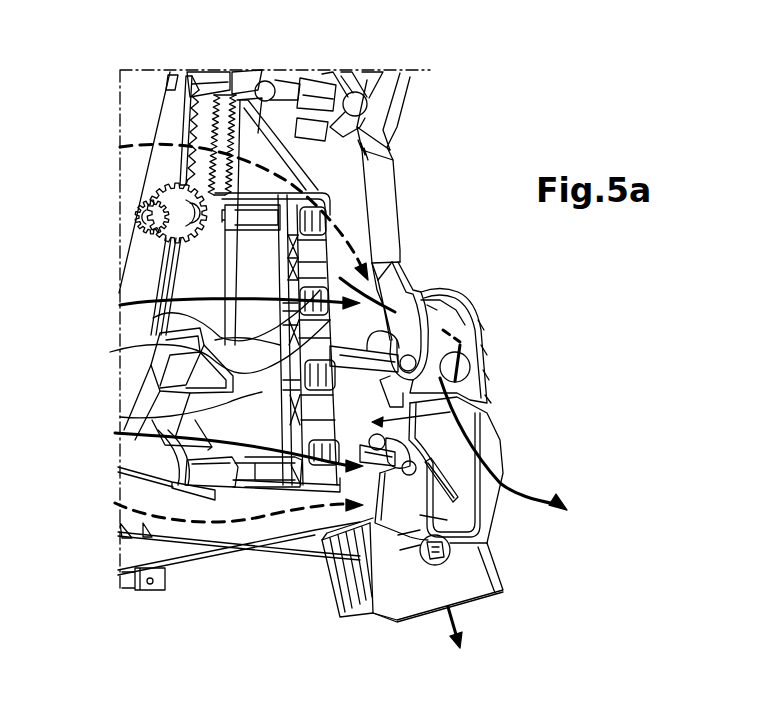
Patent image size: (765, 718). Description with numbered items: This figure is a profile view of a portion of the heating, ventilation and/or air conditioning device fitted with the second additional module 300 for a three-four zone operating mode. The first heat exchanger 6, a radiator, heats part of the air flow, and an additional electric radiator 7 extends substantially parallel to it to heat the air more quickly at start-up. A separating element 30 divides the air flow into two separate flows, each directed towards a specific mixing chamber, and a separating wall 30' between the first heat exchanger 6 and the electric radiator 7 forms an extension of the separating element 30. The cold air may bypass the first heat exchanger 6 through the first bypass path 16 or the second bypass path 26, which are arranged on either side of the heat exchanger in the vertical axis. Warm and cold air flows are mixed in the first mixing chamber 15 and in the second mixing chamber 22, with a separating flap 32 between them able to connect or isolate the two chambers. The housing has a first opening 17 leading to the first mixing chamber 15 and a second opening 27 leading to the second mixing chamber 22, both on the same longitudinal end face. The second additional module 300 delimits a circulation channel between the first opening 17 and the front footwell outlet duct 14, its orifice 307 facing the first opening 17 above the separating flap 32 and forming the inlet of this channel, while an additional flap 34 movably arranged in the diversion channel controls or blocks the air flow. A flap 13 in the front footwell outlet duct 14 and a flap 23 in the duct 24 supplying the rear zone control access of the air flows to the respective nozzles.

The first heat exchanger 6 is at (247, 265).
The additional electric radiator 7 is at (292, 318).
The flap 13 is at (360, 505).
The front footwell outlet duct 14 is at (500, 443).
The first air flow mixing chamber 15 is at (352, 195).
The first bypass path 16 is at (258, 133).
The first opening 17 is at (396, 300).
The second mixing chamber 22 is at (473, 436).
The flap 23 is at (453, 543).
The duct 24 is at (418, 622).
The second bypass path 26 is at (228, 528).
The second opening 27 is at (410, 410).
The separating element 30 is at (145, 384).
The separating wall 30' is at (182, 453).
The separating flap 32 is at (397, 253).
The additional flap 34 is at (460, 367).
The second additional module 300 is at (487, 344).
The orifice 307 is at (415, 335).